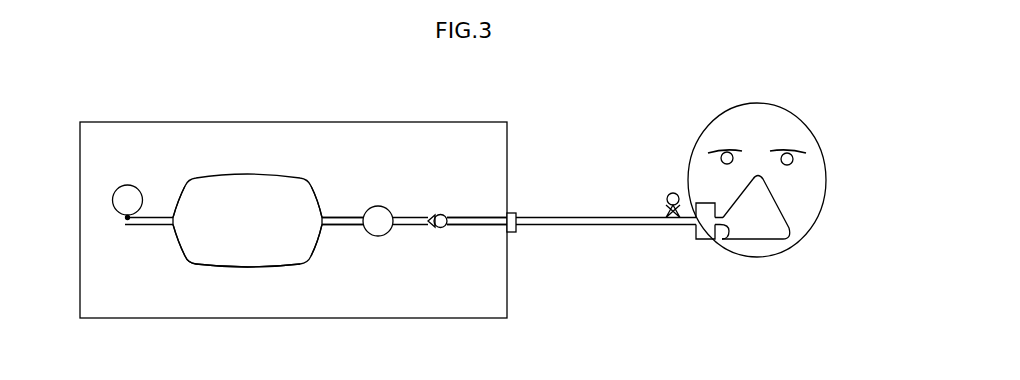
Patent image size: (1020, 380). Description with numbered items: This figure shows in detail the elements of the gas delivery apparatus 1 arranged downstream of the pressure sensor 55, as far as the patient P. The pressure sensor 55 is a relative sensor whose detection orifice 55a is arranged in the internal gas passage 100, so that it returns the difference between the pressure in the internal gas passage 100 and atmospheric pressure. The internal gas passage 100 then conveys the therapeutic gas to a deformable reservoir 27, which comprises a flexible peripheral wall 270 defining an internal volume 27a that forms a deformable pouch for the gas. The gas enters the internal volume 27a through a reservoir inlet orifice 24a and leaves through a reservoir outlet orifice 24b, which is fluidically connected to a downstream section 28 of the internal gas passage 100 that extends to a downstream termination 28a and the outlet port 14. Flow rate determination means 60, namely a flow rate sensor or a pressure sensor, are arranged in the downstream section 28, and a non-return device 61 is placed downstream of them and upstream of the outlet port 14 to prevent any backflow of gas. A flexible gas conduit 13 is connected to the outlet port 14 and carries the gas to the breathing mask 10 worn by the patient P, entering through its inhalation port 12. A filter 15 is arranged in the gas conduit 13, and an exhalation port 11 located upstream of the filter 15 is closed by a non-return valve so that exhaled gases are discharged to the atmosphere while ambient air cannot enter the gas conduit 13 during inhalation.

The gas delivery apparatus 1 is at (205, 122).
The breathing mask 10 is at (773, 193).
The exhalation port 11 is at (667, 199).
The inhalation port 12 is at (730, 240).
The flexible gas conduit 13 is at (607, 214).
The outlet port 14 is at (517, 213).
The filter 15 is at (705, 240).
The reservoir inlet orifice 24a is at (173, 215).
The reservoir outlet orifice 24b is at (312, 227).
The deformable reservoir 27 is at (275, 267).
The internal volume 27a is at (242, 237).
The flexible peripheral wall 270 is at (213, 268).
The downstream section 28 is at (340, 217).
The downstream termination 28a is at (487, 215).
The pressure sensor 55 is at (115, 190).
The detection orifice 55a is at (130, 222).
The flow rate determination means 60 is at (375, 237).
The non-return device 61 is at (443, 230).
The internal gas passage 100 is at (170, 227).
The patient P is at (803, 102).